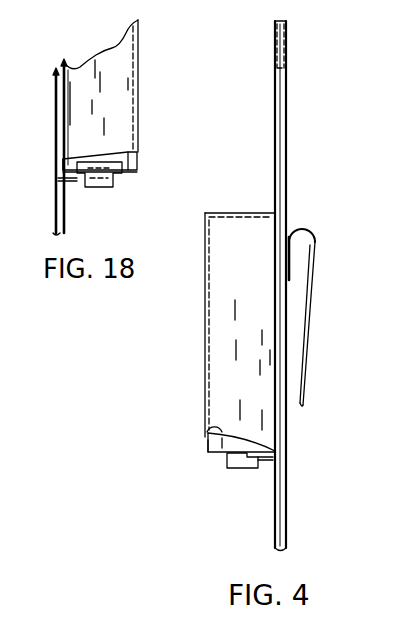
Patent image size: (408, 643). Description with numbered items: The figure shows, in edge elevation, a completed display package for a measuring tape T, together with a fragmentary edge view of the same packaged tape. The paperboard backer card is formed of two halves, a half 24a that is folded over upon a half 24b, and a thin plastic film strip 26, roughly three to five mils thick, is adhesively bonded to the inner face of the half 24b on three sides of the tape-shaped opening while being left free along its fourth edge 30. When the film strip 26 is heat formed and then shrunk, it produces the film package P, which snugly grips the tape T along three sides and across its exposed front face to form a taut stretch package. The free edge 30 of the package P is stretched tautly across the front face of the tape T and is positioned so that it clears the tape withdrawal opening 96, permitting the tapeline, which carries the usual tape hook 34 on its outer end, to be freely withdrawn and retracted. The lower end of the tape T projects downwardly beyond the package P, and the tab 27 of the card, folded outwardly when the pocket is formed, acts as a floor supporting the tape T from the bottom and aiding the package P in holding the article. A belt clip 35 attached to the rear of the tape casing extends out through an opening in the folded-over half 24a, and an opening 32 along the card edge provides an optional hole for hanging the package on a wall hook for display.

In FIG. 18, the film package P is at (127, 95).
In FIG. 18, the backer card half 24a is at (55, 184).
In FIG. 4, the backer card half 24a is at (288, 474).
In FIG. 18, the backer card half 24b is at (67, 226).
In FIG. 4, the backer card half 24b is at (274, 478).
In FIG. 18, the free edge 30 is at (112, 152).
In FIG. 4, the free edge 30 is at (207, 426).
In FIG. 18, the measuring tape T is at (137, 155).
In FIG. 4, the measuring tape T is at (210, 447).
In FIG. 18, the tape withdrawal opening 96 is at (137, 163).
In FIG. 18, the tape hook 34 is at (107, 186).
In FIG. 4, the tape hook 34 is at (227, 466).
In FIG. 18, the tab 27 is at (70, 181).
In FIG. 4, the tab 27 is at (248, 470).
In FIG. 4, the hanging opening 32 is at (280, 50).
In FIG. 4, the plastic film strip 26 is at (205, 384).
In FIG. 4, the belt clip 35 is at (316, 262).